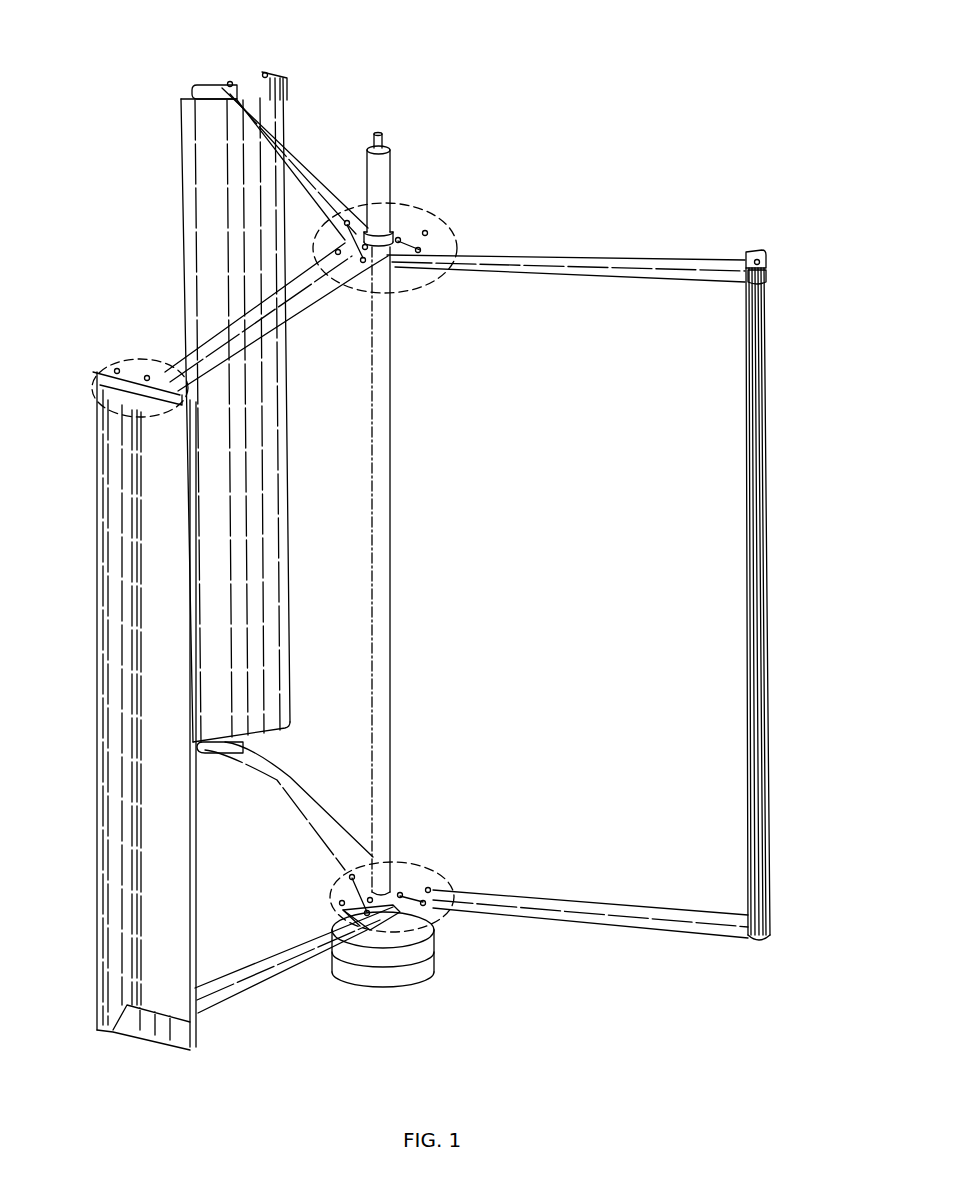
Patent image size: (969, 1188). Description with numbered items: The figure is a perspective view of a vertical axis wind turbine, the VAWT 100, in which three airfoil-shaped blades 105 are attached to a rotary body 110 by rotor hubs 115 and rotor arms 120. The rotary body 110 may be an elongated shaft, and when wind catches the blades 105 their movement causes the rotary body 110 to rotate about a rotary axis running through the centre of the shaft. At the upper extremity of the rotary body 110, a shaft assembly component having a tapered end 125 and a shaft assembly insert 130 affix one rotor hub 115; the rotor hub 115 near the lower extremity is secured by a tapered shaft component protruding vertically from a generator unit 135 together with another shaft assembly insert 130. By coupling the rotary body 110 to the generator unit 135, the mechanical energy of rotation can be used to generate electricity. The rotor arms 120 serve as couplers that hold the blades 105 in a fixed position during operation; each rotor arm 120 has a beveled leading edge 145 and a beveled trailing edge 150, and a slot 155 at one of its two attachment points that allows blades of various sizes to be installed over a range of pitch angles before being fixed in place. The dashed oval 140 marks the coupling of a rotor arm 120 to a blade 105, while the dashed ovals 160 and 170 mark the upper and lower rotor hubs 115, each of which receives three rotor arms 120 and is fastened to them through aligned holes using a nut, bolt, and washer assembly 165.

The VAWT 100 is at (645, 126).
The airfoil-shaped blade 105 is at (200, 128).
The rotary body 110 is at (380, 500).
The rotor hub 115 is at (412, 233).
The rotor arm 120 is at (293, 140).
The tapered end 125 is at (386, 165).
The shaft assembly insert 130 is at (385, 265).
The generator unit 135 is at (412, 958).
The dashed oval 140 is at (101, 360).
The beveled leading edge 145 is at (265, 78).
The beveled trailing edge 150 is at (195, 95).
The slot 155 is at (230, 84).
The dashed oval 160 is at (440, 290).
The nut, bolt, and washer assembly 165 is at (400, 240).
The dashed oval 170 is at (343, 870).